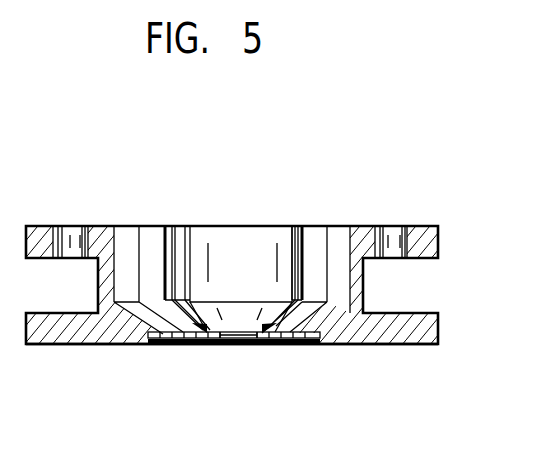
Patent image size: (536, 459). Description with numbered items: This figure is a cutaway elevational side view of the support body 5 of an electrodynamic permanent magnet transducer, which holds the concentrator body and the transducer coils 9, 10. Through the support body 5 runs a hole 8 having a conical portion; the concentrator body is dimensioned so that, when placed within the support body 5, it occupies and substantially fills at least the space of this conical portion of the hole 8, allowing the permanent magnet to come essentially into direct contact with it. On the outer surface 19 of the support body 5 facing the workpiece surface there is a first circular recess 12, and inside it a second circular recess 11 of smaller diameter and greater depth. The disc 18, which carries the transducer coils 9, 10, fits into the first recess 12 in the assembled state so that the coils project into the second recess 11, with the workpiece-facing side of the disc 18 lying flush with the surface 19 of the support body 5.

The support body 5 is at (259, 285).
The hole 8 is at (252, 253).
The transducer coil 9 is at (233, 333).
The transducer coil 10 is at (157, 342).
The second recess 11 is at (212, 241).
The first recess 12 is at (190, 384).
The disc 18 is at (361, 223).
The outer surface 19 is at (371, 350).